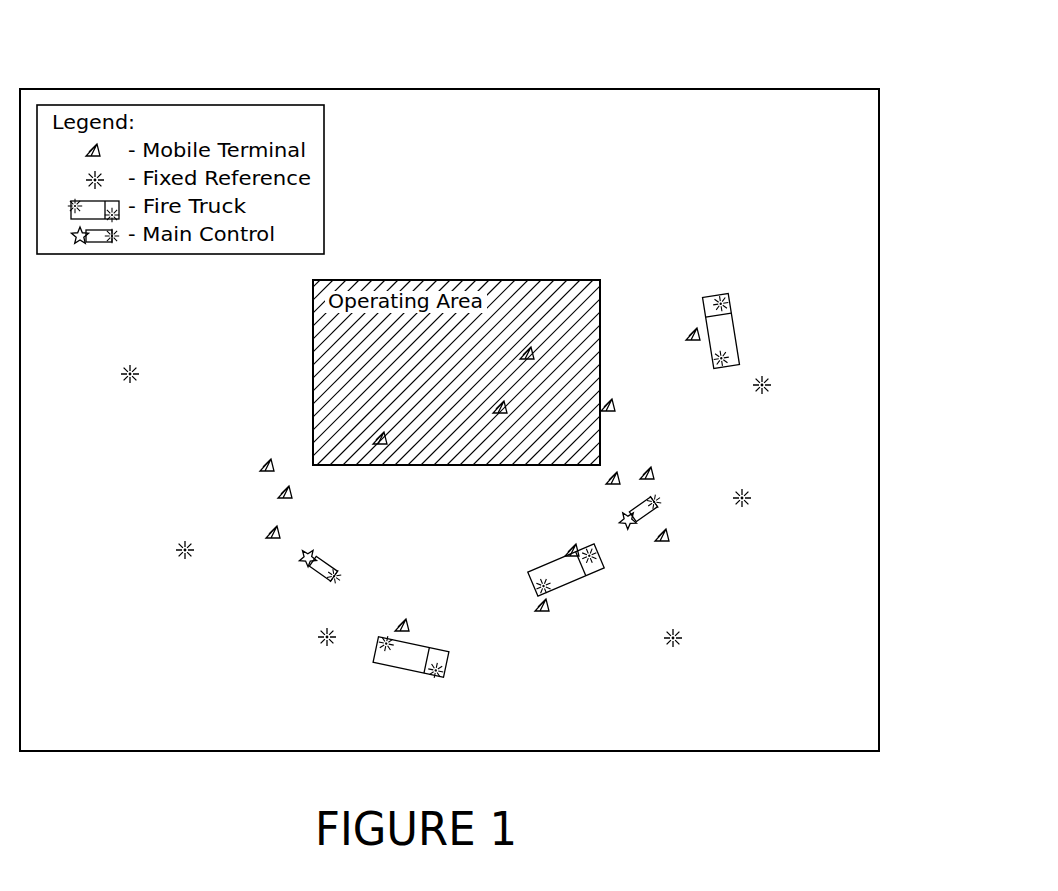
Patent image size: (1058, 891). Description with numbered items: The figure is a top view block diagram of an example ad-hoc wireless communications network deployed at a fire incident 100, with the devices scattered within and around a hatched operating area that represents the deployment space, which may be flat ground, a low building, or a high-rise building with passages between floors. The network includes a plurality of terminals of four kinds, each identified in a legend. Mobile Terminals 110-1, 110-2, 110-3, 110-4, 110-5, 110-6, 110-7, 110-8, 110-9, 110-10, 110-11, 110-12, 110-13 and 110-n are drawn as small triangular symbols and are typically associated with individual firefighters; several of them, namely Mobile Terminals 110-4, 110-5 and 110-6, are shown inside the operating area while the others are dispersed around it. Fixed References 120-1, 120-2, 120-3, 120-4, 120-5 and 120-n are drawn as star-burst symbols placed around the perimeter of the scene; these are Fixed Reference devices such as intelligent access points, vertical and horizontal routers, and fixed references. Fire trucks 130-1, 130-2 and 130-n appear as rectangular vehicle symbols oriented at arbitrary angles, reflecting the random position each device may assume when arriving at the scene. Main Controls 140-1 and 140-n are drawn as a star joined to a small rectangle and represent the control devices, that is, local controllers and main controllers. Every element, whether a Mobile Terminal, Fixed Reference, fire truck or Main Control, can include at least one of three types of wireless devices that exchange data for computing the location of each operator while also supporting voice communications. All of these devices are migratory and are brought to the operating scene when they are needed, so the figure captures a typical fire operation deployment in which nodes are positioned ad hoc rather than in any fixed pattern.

The fire incident 100 is at (665, 64).
The mobile terminal 110-1 is at (259, 462).
The mobile terminal 110-2 is at (278, 491).
The mobile terminal 110-3 is at (266, 532).
The mobile terminal 110-4 is at (376, 434).
The mobile terminal 110-5 is at (495, 403).
The mobile terminal 110-6 is at (558, 327).
The mobile terminal 110-7 is at (643, 388).
The mobile terminal 110-8 is at (686, 333).
The mobile terminal 110-9 is at (396, 622).
The mobile terminal 110-10 is at (568, 548).
The mobile terminal 110-11 is at (542, 613).
The mobile terminal 110-12 is at (606, 479).
The mobile terminal 110-13 is at (680, 452).
The mobile terminal 110-n is at (665, 540).
The fixed reference 120-1 is at (119, 373).
The fixed reference 120-2 is at (174, 550).
The fixed reference 120-3 is at (316, 637).
The fixed reference 120-4 is at (772, 384).
The fixed reference 120-5 is at (753, 493).
The fixed reference 120-n is at (684, 638).
The fire truck 130-1 is at (407, 673).
The fire truck 130-2 is at (577, 585).
The fire truck 130-n is at (738, 335).
The main control 140-1 is at (326, 560).
The main control 140-n is at (660, 500).